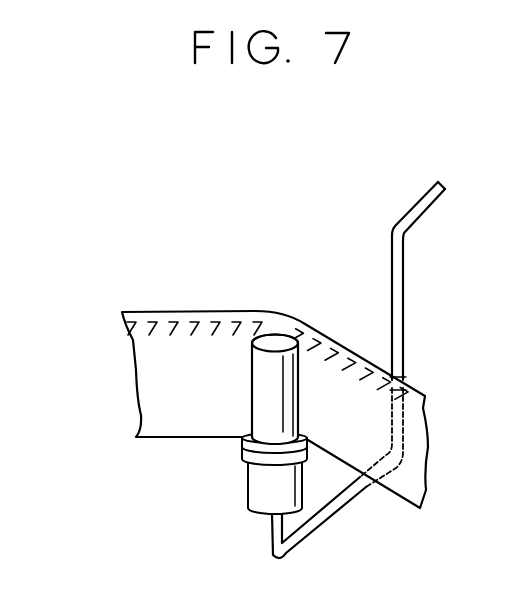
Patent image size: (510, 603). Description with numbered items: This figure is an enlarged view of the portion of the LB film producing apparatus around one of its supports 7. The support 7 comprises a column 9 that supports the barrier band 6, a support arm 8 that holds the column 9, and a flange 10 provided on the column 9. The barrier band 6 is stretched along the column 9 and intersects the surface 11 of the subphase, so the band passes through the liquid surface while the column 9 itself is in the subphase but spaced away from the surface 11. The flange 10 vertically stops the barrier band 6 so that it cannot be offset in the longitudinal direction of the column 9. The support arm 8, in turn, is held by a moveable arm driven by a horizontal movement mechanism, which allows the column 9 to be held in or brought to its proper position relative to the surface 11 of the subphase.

The surface of the subphase 11 is at (107, 321).
The barrier band 6 is at (354, 348).
The column 9 is at (281, 347).
The flange 10 is at (241, 447).
The support arm 8 is at (414, 206).
The support 7 is at (322, 474).